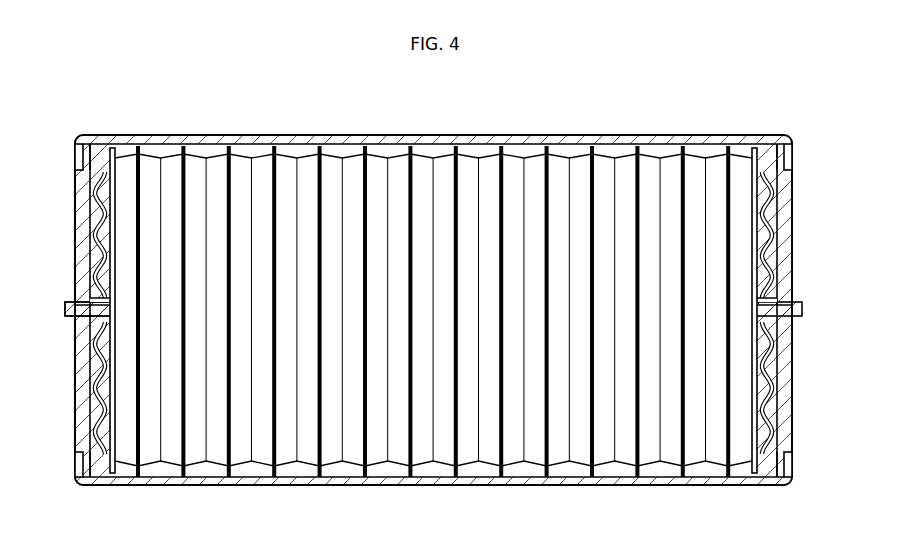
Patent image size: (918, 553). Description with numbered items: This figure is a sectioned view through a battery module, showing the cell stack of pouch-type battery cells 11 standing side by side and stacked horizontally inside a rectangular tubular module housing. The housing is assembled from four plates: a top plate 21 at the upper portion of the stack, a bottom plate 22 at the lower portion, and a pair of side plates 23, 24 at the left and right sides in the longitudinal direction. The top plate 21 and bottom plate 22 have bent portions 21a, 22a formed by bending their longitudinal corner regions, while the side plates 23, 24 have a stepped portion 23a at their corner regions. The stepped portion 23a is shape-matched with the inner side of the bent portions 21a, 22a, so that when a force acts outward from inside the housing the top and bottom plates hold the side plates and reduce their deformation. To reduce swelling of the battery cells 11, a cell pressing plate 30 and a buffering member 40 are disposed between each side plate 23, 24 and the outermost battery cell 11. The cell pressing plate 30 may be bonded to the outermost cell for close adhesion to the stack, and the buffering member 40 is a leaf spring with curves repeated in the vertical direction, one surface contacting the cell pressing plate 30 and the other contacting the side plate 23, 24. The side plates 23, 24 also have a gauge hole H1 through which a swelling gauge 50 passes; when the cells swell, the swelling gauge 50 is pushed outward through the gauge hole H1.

The battery cells 11 is at (670, 168).
The top plate 21 is at (470, 141).
The bent portion 21a is at (790, 152).
The bottom plate 22 is at (472, 483).
The bent portion 22a is at (790, 461).
The side plate 23 is at (790, 224).
The stepped portion 23a is at (782, 160).
The side plate 24 is at (82, 223).
The cell pressing plate 30 is at (108, 421).
The buffering member 40 is at (97, 392).
The swelling gauge 50 is at (65, 311).
The gauge hole H1 is at (78, 302).